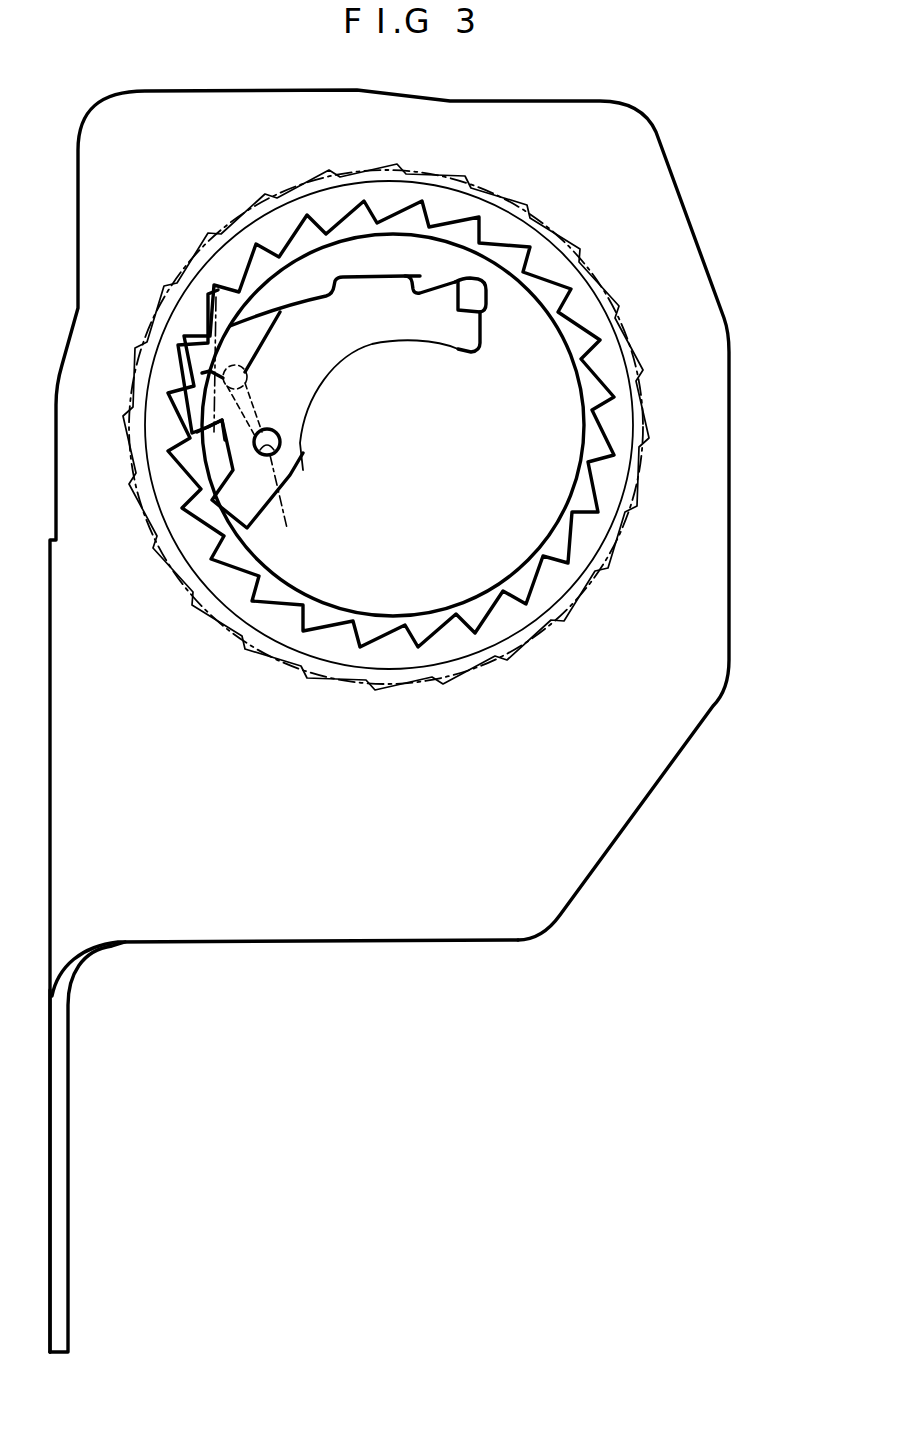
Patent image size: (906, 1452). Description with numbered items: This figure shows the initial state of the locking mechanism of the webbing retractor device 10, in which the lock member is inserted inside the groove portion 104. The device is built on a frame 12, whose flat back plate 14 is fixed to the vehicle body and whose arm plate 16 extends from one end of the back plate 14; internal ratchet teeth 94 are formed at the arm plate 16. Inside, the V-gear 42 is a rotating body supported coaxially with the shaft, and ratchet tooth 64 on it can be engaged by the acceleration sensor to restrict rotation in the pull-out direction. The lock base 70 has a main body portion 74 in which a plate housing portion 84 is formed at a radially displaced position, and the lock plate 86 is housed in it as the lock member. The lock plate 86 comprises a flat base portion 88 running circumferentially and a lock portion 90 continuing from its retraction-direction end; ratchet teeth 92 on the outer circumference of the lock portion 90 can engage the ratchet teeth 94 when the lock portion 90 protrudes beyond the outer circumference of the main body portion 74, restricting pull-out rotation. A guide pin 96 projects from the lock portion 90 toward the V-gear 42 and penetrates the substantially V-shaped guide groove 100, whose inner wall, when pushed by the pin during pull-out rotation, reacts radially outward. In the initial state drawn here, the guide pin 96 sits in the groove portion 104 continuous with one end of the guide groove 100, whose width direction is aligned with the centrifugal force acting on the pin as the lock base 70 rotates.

The webbing retractor device 10 is at (729, 223).
The frame 12 is at (118, 1147).
The back plate 14 is at (68, 1173).
The arm plate 16 is at (288, 925).
The V-gear 42 is at (393, 686).
The ratchet tooth 64 is at (243, 650).
The lock base 70 is at (391, 474).
The main body portion 74 is at (481, 572).
The plate housing portion 84 is at (401, 276).
The lock plate 86 is at (358, 291).
The base portion 88 is at (453, 342).
The lock portion 90 is at (285, 491).
The ratchet teeth 92 is at (225, 428).
The ratchet teeth 94 is at (490, 612).
The guide pin 96 is at (286, 441).
The guide groove 100 is at (213, 288).
The groove portion 104 is at (336, 490).